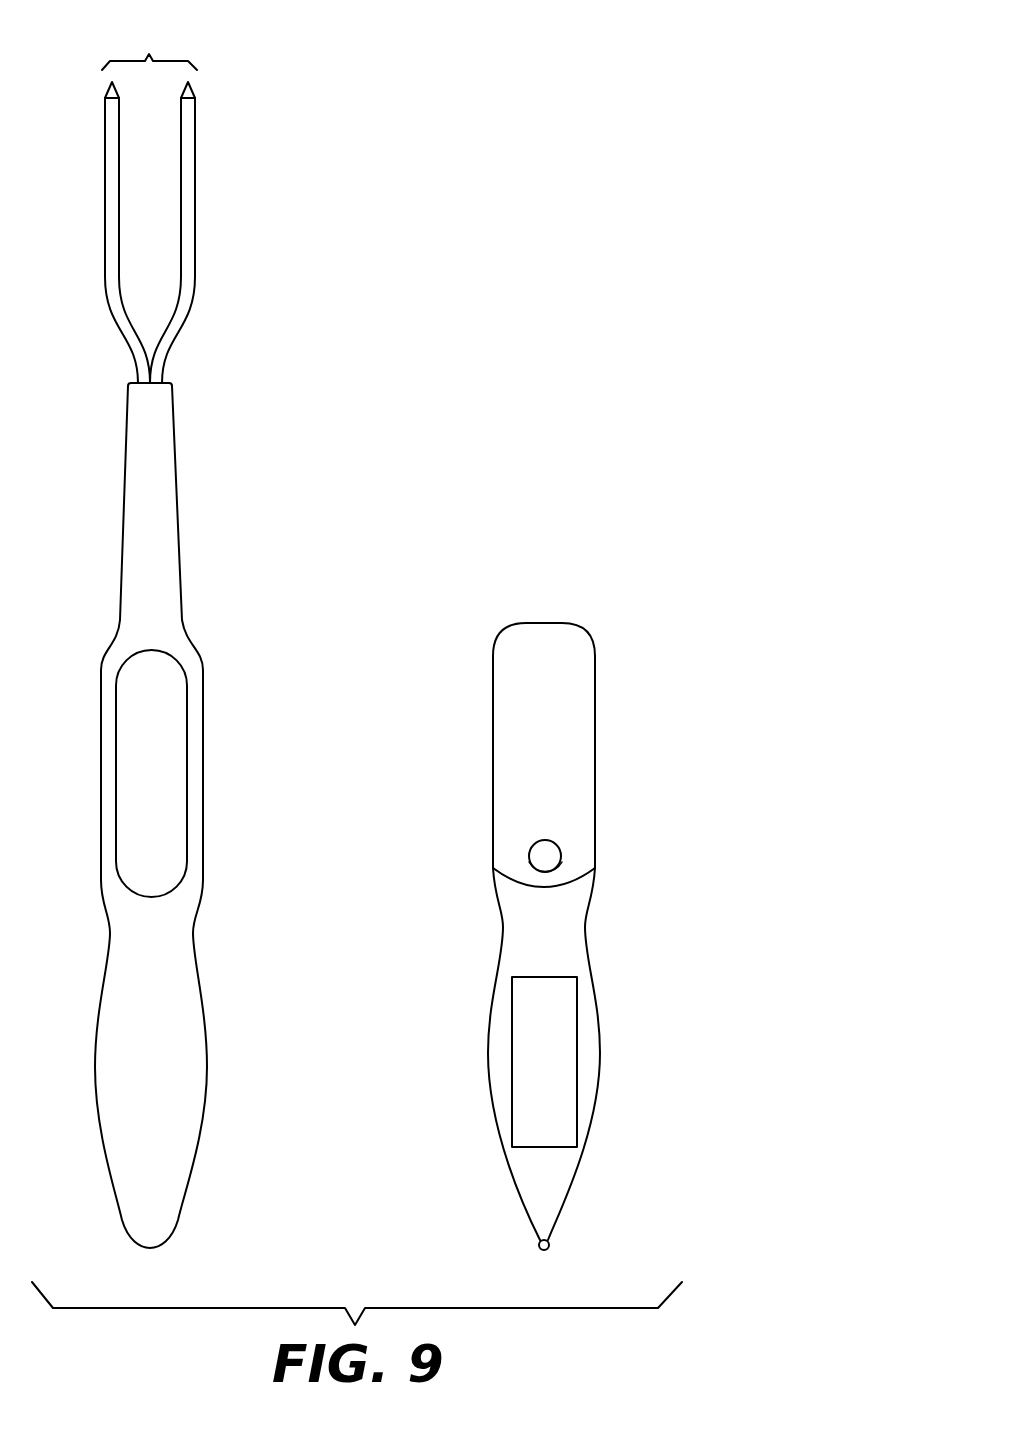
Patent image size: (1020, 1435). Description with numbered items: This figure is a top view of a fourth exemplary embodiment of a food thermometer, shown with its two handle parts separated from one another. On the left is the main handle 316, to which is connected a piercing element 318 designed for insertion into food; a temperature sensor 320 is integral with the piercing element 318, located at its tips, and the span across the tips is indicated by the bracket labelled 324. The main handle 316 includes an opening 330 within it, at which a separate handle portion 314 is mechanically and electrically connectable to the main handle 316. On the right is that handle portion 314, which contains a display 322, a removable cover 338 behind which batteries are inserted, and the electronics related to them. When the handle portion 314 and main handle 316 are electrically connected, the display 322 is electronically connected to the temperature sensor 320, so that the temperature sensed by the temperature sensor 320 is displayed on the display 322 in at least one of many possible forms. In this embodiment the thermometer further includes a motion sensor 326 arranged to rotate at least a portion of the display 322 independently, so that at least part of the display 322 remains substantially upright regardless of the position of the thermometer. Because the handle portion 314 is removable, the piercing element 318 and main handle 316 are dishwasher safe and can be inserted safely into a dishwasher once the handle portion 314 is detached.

The handle portion 314 is at (587, 912).
The main handle 316 is at (180, 540).
The piercing element 318 is at (188, 242).
The temperature sensor 320 is at (191, 88).
The display 322 is at (573, 712).
The tine spacing 324 is at (149, 42).
The motion sensor 326 is at (543, 858).
The opening 330 is at (165, 777).
The removable cover 338 is at (565, 1020).